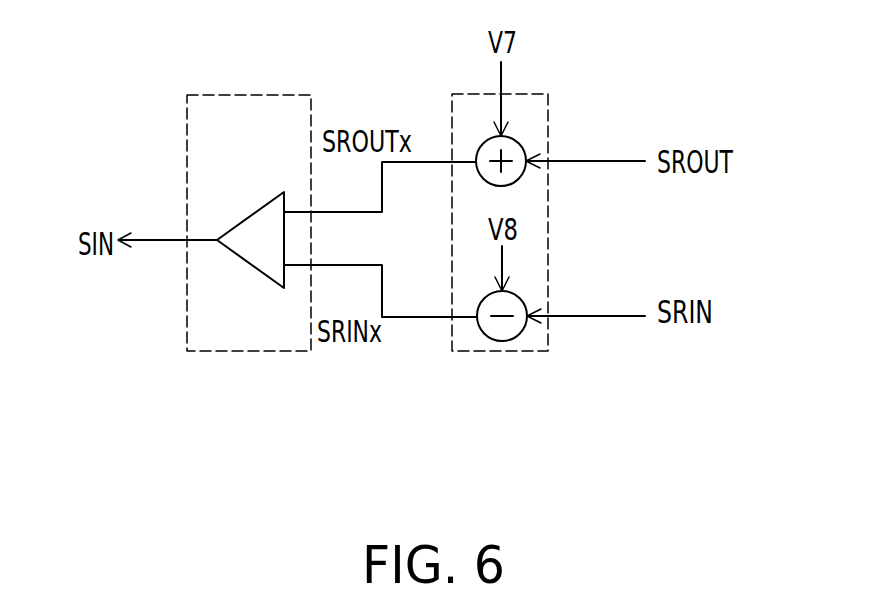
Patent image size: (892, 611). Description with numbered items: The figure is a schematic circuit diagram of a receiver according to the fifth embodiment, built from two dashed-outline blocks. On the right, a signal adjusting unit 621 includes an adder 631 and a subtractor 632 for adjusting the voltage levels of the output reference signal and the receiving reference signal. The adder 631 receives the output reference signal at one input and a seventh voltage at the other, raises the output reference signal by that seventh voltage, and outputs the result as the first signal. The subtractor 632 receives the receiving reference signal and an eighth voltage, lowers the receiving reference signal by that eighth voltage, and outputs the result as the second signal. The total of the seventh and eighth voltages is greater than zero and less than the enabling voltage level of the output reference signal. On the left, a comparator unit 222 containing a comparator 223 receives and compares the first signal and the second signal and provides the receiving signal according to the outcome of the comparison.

The comparator unit 222 is at (250, 352).
The comparator 223 is at (250, 215).
The signal adjusting unit 621 is at (503, 352).
The adder 631 is at (512, 136).
The subtractor 632 is at (514, 292).